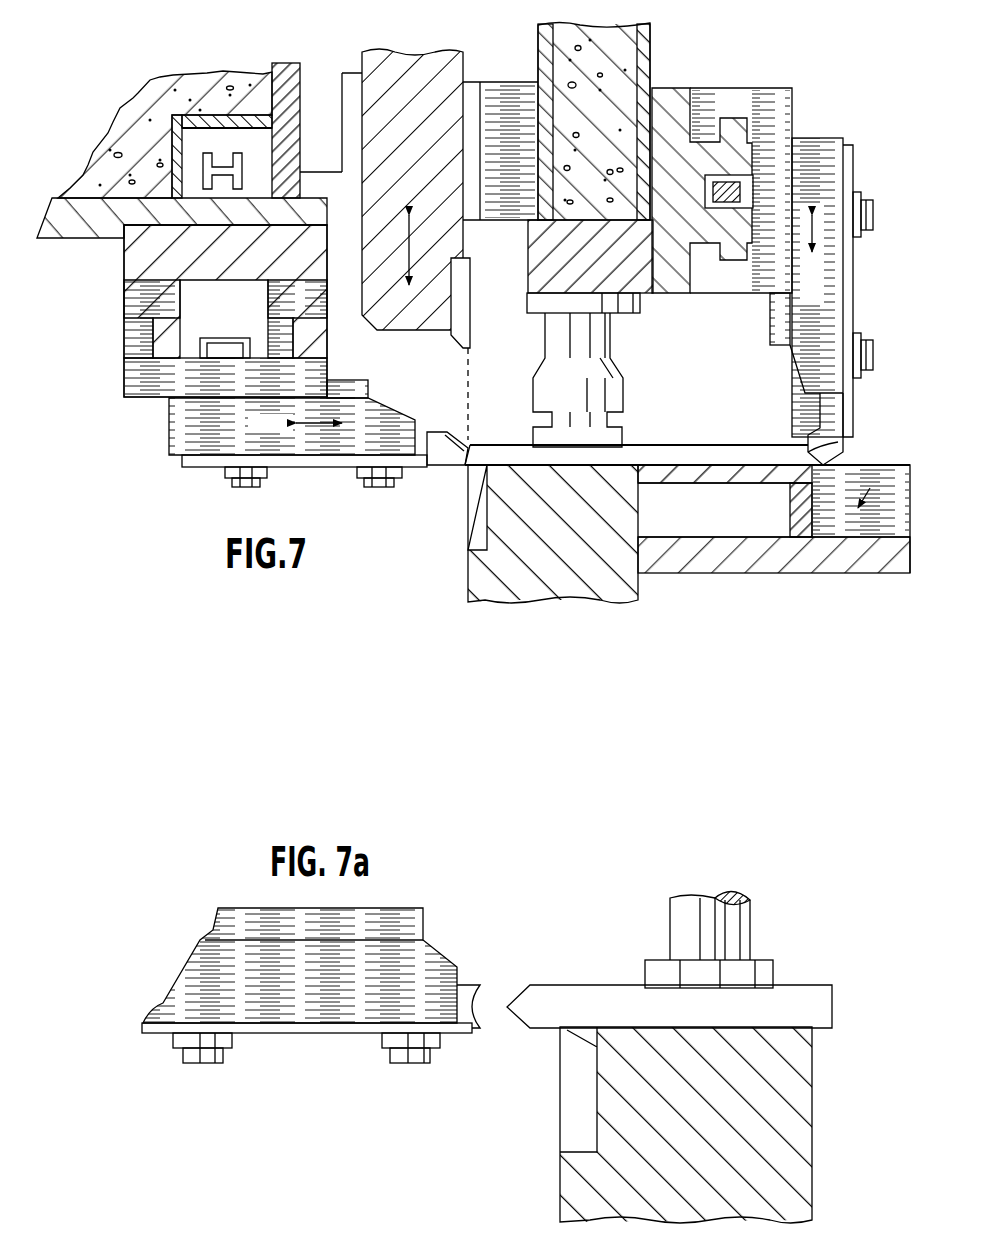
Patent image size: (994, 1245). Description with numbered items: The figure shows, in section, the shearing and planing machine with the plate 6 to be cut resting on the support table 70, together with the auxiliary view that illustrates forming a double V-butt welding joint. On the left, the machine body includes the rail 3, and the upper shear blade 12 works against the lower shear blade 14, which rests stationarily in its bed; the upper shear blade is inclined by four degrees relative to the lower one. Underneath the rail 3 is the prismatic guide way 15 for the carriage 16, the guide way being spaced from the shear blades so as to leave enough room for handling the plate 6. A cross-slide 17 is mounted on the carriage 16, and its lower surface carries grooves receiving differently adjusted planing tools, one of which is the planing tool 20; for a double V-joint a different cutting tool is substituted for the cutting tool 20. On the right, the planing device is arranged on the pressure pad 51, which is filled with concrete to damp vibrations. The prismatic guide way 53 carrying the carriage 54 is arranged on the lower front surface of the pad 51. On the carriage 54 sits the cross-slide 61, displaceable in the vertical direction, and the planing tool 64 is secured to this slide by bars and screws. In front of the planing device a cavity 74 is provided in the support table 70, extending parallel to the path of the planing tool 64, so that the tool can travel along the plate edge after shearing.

The rail 3 is at (60, 232).
The plate 6 is at (712, 458).
The upper shear blade 12 is at (473, 522).
The lower shear blade 14 is at (458, 338).
The prismatic guide way 15 is at (138, 254).
The carriage 16 is at (150, 328).
The cross-slide 17 is at (192, 428).
The planing tool 20 is at (445, 446).
The pressure pad 51 is at (645, 42).
The prismatic guide way 53 is at (672, 288).
The carriage 54 is at (763, 110).
The cross-slide 61 is at (808, 366).
The planing tool 64 is at (836, 420).
The support table 70 is at (688, 552).
The cavity 74 is at (866, 488).